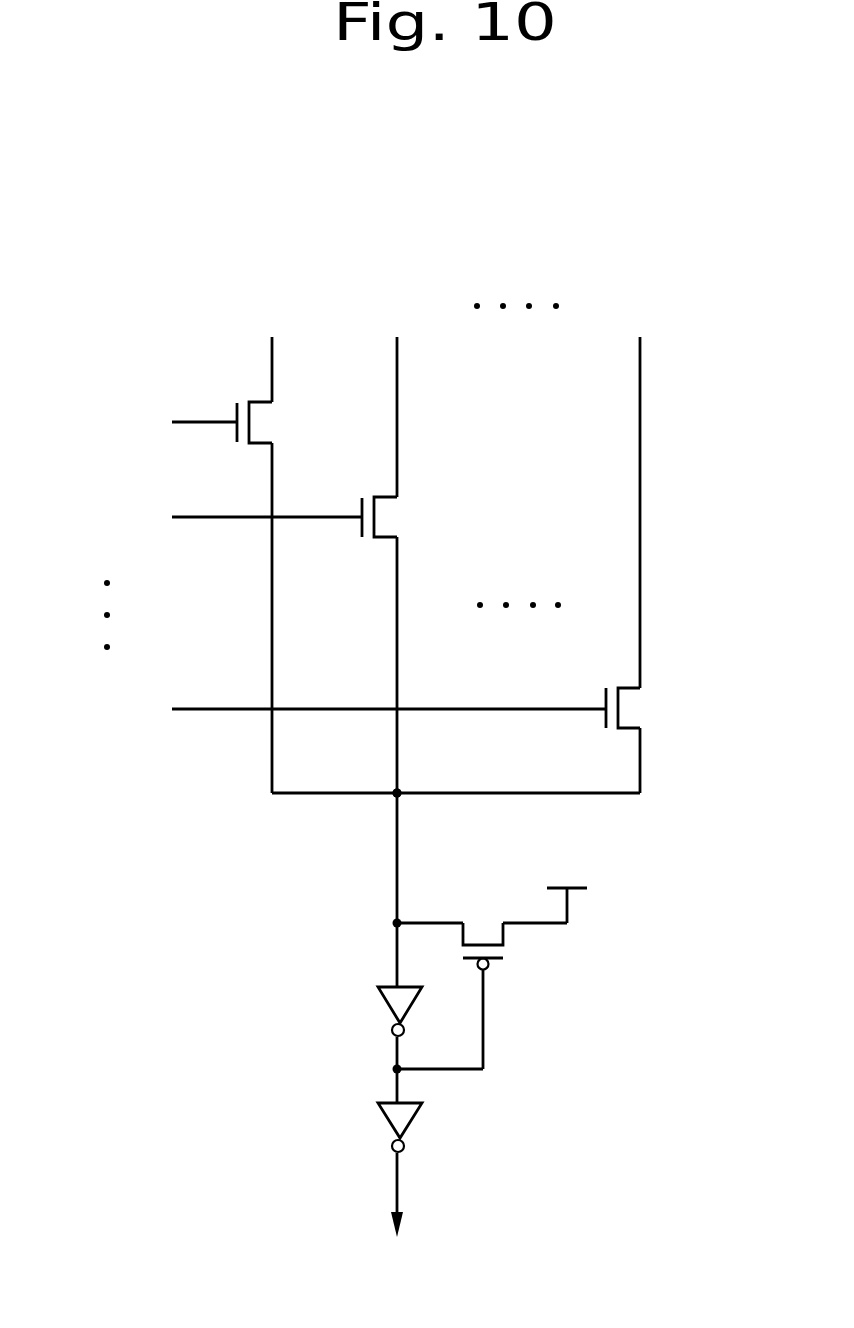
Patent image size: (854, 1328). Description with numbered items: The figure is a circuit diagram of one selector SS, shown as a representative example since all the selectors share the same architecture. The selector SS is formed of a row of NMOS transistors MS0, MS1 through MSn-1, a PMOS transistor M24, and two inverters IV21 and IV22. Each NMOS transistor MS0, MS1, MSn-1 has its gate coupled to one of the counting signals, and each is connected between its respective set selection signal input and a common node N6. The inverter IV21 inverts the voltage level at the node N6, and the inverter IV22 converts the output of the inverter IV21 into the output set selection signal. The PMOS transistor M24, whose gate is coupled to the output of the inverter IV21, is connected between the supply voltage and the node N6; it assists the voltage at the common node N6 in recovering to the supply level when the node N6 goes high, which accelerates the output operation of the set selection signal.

The selector SS is at (108, 233).
The NMOS transistor MS0 is at (277, 422).
The NMOS transistor MS1 is at (401, 517).
The NMOS transistor MSn-1 is at (661, 708).
The common node N6 is at (395, 797).
The PMOS transistor M24 is at (484, 930).
The inverter IV21 is at (387, 1010).
The inverter IV22 is at (387, 1125).